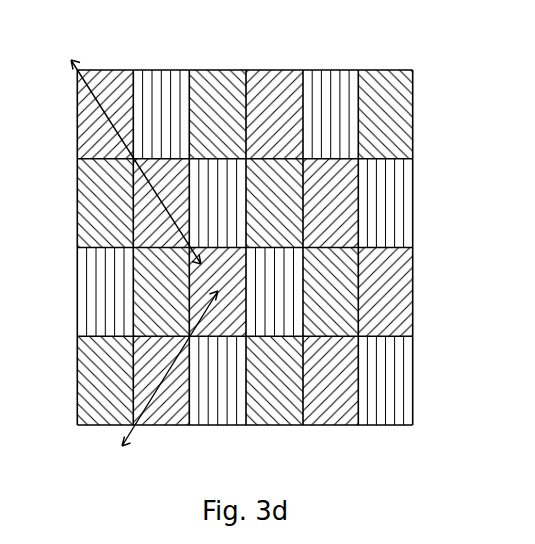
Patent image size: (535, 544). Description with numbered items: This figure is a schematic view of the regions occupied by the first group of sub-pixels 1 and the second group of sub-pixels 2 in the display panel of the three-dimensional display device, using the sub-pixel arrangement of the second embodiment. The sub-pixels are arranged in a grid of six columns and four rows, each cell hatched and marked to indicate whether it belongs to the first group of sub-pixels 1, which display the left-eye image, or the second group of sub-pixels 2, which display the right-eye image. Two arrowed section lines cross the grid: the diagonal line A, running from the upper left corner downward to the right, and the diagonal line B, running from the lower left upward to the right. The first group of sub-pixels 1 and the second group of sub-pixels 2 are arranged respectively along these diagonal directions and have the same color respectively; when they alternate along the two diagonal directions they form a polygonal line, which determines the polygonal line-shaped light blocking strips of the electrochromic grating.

The first group of sub-pixels 1 is at (244, 247).
The second group of sub-pixels 2 is at (240, 247).
The diagonal line AA' A is at (134, 154).
The diagonal line BB' B is at (167, 367).